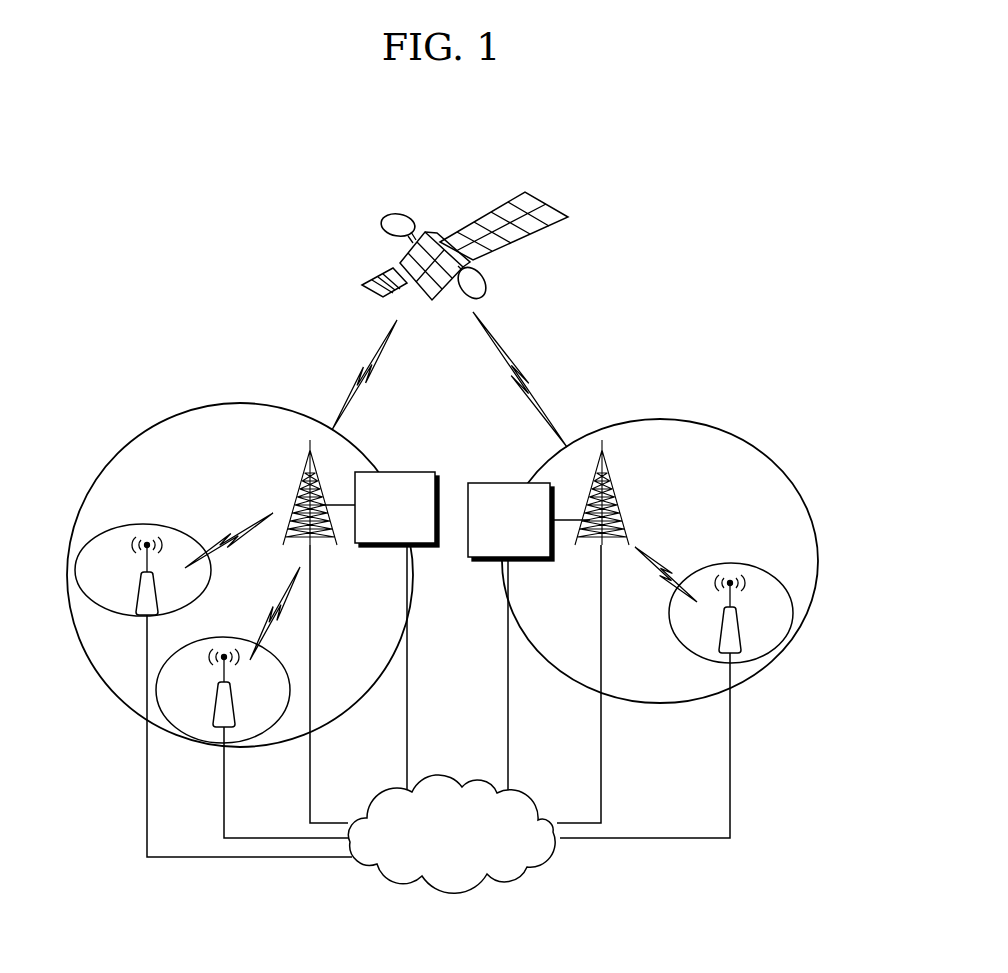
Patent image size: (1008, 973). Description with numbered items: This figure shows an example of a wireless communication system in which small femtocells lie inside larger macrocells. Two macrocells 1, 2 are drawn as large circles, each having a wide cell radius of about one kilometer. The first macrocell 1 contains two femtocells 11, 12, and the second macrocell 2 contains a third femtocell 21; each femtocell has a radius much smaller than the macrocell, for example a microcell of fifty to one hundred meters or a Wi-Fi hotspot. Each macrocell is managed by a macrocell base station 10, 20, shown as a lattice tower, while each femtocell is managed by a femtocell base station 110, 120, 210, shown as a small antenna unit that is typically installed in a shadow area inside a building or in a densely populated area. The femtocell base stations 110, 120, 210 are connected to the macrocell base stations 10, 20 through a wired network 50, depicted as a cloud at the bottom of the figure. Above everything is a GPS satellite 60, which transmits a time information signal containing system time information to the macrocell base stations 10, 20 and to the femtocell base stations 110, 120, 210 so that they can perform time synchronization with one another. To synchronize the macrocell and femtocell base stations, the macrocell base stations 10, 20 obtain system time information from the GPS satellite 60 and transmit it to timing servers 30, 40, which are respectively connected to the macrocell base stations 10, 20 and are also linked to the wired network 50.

The macrocell 1 is at (187, 410).
The macrocell 2 is at (700, 424).
The macrocell base station 10 is at (306, 485).
The femtocell 11 is at (168, 527).
The femtocell 12 is at (226, 637).
The femtocell base station 110 is at (140, 578).
The femtocell base station 120 is at (216, 710).
The macrocell base station 20 is at (609, 476).
The femtocell 21 is at (745, 563).
The femtocell base station 210 is at (719, 643).
The timing server 30 is at (400, 472).
The timing server 40 is at (505, 483).
The wired network 50 is at (480, 781).
The GPS satellite 60 is at (553, 203).